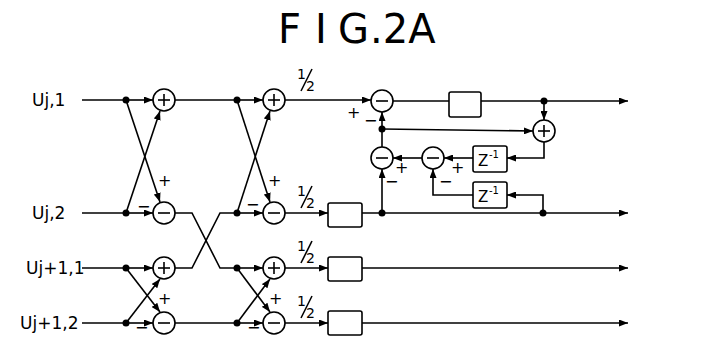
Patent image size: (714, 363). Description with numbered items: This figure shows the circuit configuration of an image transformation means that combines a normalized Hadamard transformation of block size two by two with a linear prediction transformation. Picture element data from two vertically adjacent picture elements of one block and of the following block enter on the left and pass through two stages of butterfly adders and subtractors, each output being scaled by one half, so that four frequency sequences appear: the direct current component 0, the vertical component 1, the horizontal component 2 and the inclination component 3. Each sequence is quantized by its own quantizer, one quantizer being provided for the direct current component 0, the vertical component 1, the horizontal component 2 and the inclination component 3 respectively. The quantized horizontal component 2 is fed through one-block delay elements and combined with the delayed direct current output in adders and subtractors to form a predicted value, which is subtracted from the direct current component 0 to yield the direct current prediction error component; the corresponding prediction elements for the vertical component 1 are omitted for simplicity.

The direct current component 0 is at (562, 103).
The vertical component 1 is at (495, 269).
The horizontal component 2 is at (495, 215).
The inclination component 3 is at (495, 323).